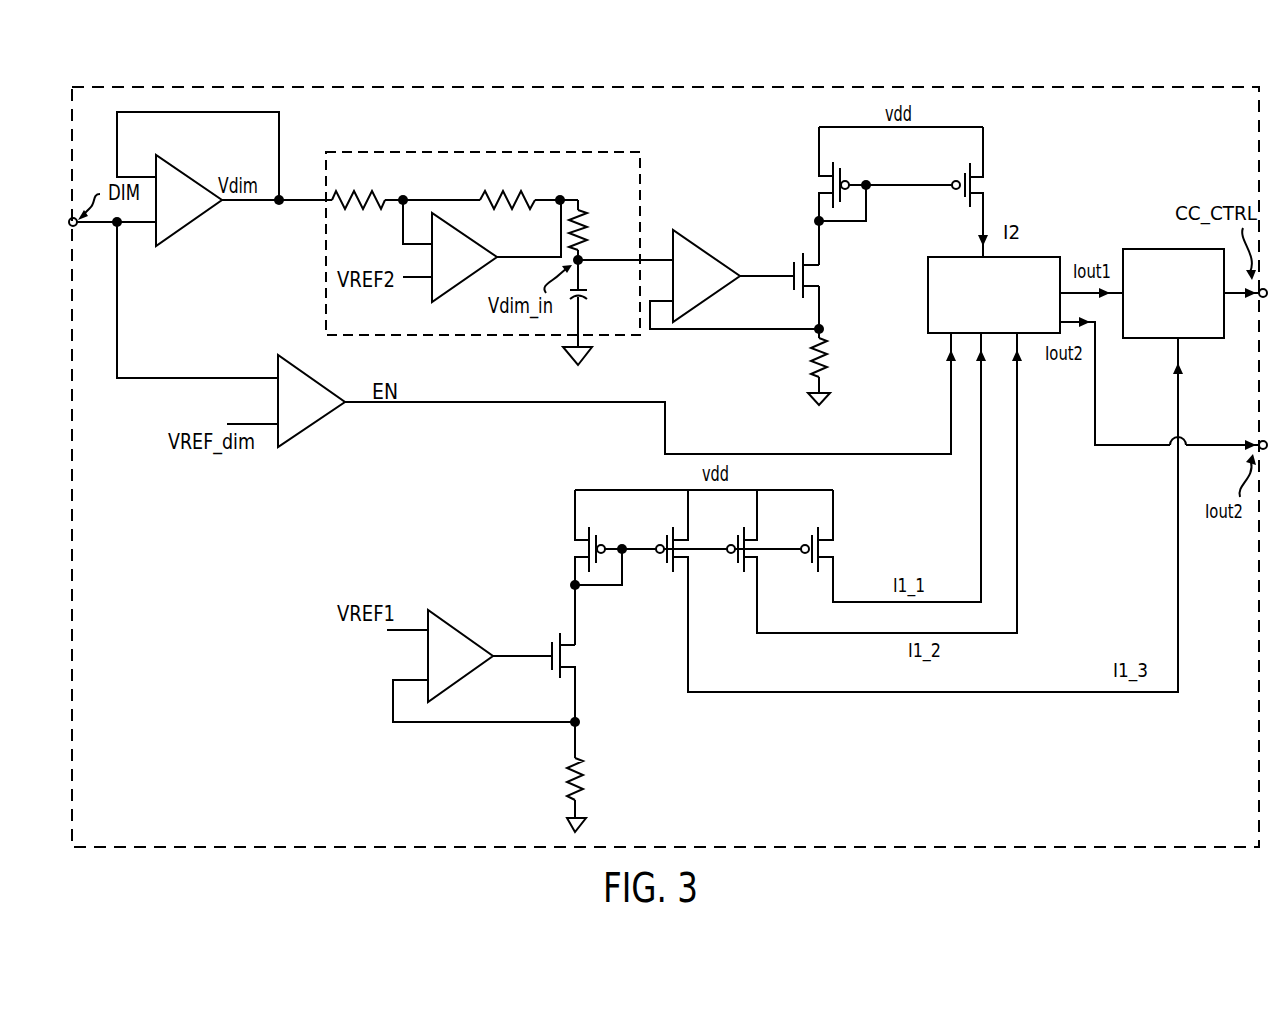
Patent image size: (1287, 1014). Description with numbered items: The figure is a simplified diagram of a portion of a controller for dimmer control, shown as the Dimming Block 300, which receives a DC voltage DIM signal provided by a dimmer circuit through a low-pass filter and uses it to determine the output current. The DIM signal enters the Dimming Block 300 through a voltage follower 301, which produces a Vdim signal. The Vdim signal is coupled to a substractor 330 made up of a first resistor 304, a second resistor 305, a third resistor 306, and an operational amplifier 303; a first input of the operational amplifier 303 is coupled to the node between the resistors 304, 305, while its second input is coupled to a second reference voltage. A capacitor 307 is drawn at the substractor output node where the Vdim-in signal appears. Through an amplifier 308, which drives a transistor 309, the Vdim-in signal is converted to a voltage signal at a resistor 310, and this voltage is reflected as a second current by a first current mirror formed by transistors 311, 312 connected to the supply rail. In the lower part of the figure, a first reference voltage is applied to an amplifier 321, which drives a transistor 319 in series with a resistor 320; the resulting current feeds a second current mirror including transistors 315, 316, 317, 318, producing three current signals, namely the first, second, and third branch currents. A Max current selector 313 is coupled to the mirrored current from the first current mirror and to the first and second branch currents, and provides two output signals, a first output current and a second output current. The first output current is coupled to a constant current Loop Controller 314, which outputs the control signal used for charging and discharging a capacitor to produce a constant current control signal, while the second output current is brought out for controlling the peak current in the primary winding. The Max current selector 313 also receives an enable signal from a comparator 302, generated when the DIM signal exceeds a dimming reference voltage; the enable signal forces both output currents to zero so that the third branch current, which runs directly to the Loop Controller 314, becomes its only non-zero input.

The Dimming Block 300 is at (1234, 79).
The voltage follower 301 is at (198, 180).
The comparator 302 is at (291, 401).
The operational amplifier 303 is at (482, 251).
The first resistor 304 is at (358, 187).
The second resistor 305 is at (507, 183).
The third resistor 306 is at (597, 226).
The capacitor 307 is at (592, 312).
The amplifier 308 is at (734, 279).
The transistor 309 is at (828, 275).
The resistor 310 is at (835, 367).
The transistor 311 is at (849, 174).
The transistor 312 is at (990, 192).
The Max current selector 313 is at (928, 312).
The constant current (CC) Loop Controller 314 is at (1200, 338).
The transistor 315 is at (836, 535).
The transistor 316 is at (732, 542).
The transistor 317 is at (668, 544).
The transistor 318 is at (606, 537).
The transistor 319 is at (583, 677).
The resistor 320 is at (593, 777).
The amplifier 321 is at (481, 666).
The substractor 330 is at (464, 152).